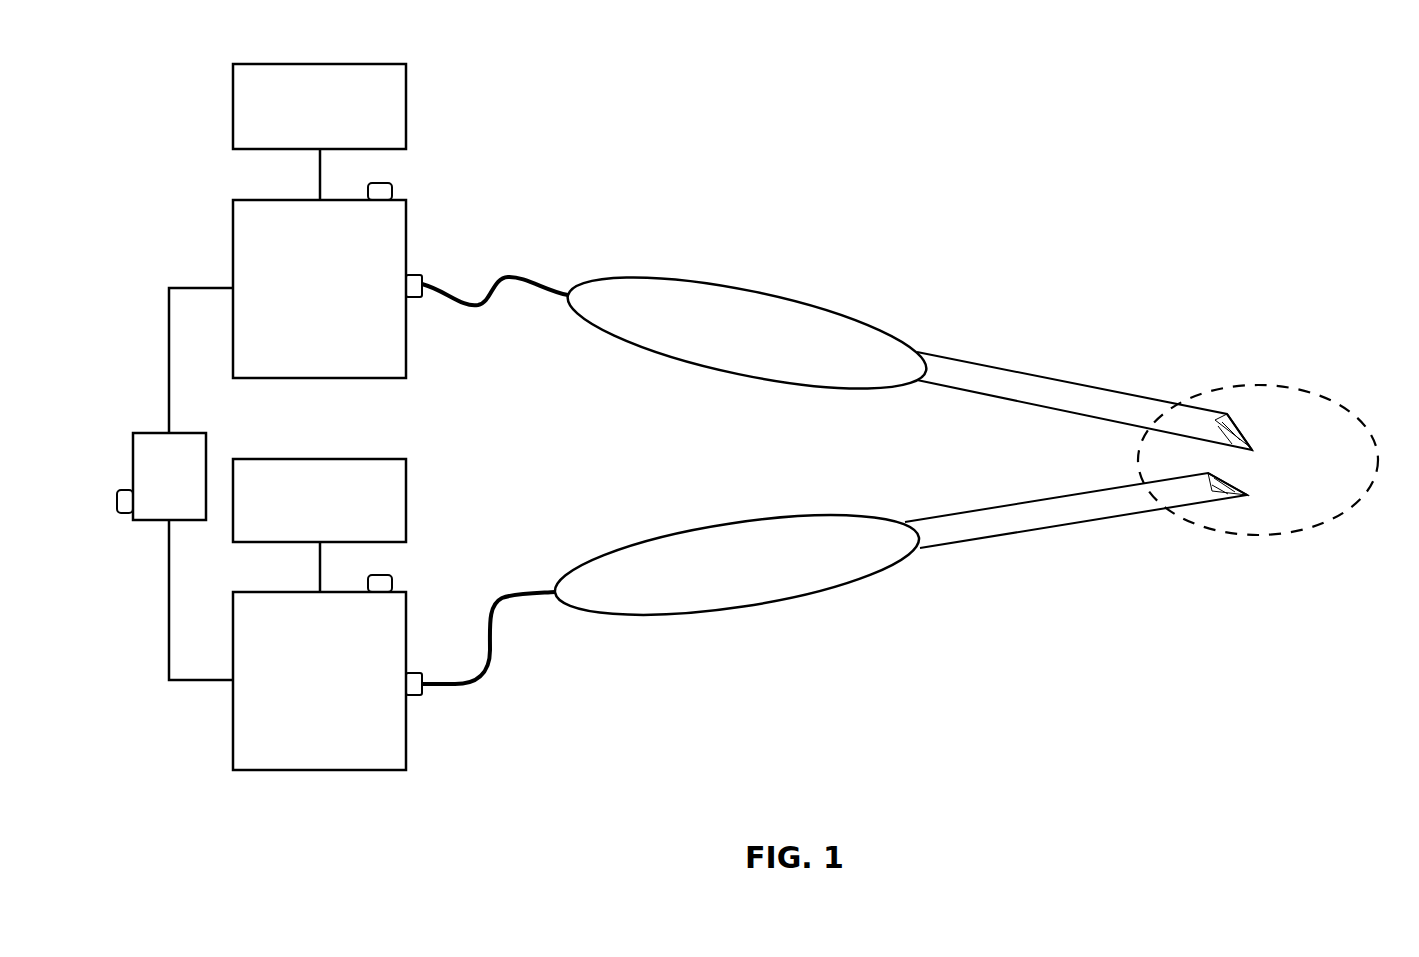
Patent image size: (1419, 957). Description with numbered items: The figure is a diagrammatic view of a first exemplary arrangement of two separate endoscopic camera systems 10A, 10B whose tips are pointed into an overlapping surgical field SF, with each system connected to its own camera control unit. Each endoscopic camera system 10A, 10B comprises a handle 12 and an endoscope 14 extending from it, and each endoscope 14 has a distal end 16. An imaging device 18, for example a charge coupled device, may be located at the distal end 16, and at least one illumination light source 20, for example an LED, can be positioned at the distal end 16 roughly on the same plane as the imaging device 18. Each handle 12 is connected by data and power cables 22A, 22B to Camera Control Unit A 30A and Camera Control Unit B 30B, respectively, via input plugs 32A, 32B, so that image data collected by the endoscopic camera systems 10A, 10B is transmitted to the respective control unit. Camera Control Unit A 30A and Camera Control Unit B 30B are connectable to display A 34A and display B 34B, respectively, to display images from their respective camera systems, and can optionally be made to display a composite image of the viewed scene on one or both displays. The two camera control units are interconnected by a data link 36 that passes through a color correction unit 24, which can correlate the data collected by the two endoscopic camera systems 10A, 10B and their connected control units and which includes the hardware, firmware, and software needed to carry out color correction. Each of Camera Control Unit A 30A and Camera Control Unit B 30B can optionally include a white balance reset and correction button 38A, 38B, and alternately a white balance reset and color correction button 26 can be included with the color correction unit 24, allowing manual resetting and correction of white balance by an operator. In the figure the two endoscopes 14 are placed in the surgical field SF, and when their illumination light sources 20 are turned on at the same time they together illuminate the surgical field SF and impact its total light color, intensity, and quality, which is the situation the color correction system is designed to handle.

The endoscopic camera system 10A is at (952, 325).
The endoscopic camera system 10B is at (911, 586).
The handle 12 is at (800, 302).
The endoscope 14 is at (1077, 383).
The distal end 16 is at (1240, 435).
The imaging device 18 is at (1233, 423).
The illumination light source 20 is at (1242, 440).
The data and power cable 22A is at (527, 277).
The data and power cable 22B is at (493, 617).
The color correction unit 24 is at (206, 443).
The white balance reset and color correction button 26 is at (122, 513).
The Camera Control Unit A 30A is at (406, 228).
The Camera Control Unit B 30B is at (406, 612).
The input plug 32A is at (422, 297).
The input plug 32B is at (422, 697).
The display A 34A is at (406, 98).
The display B 34B is at (406, 480).
The data link 36 is at (169, 398).
The white balance reset and correction button 38A is at (392, 190).
The white balance reset and correction button 38B is at (392, 582).
The surgical field SF is at (1278, 540).